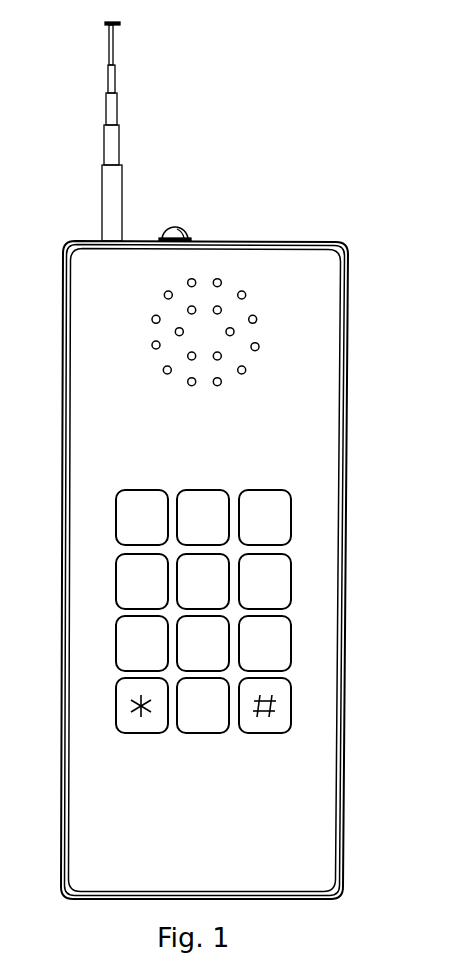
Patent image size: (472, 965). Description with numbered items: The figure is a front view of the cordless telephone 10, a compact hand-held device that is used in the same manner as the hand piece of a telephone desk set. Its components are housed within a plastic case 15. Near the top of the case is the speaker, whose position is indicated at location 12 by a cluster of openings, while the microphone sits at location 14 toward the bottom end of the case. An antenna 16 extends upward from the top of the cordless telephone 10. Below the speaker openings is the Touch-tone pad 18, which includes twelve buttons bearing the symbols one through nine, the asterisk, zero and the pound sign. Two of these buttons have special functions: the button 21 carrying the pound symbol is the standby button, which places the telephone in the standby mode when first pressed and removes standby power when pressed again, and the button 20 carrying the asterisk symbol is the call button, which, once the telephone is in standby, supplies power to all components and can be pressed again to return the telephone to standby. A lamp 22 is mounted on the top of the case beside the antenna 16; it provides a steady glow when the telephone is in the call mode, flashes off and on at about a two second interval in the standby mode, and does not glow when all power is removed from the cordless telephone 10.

The cordless telephone 10 is at (220, 480).
The speaker location 12 is at (257, 318).
The microphone location 14 is at (270, 900).
The plastic case 15 is at (325, 435).
The antenna 16 is at (119, 134).
The Touch-tone pad 18 is at (293, 573).
The call button 20 is at (117, 698).
The standby button 21 is at (282, 707).
The lamp 22 is at (183, 225).